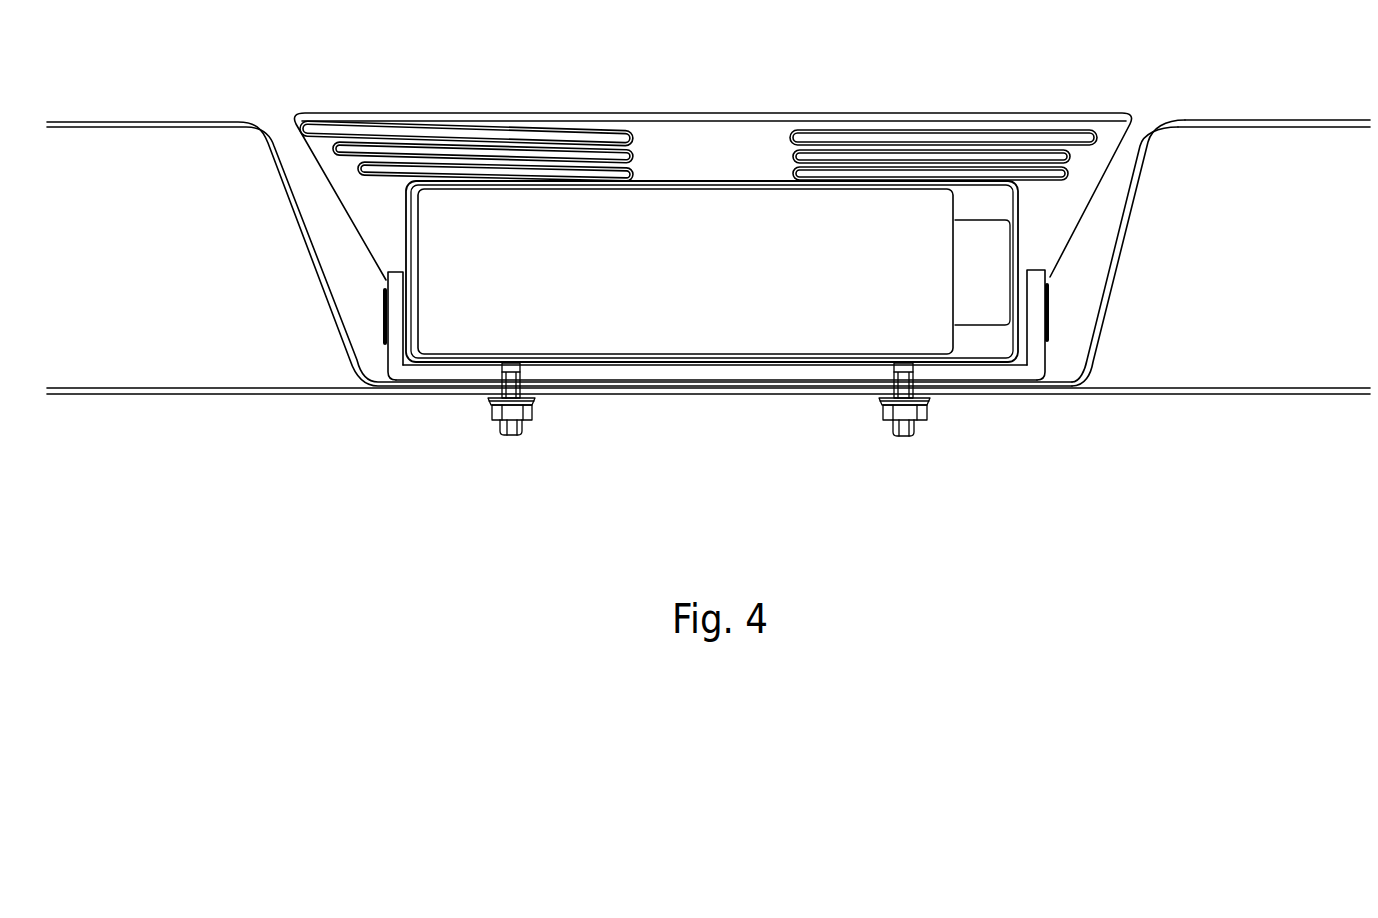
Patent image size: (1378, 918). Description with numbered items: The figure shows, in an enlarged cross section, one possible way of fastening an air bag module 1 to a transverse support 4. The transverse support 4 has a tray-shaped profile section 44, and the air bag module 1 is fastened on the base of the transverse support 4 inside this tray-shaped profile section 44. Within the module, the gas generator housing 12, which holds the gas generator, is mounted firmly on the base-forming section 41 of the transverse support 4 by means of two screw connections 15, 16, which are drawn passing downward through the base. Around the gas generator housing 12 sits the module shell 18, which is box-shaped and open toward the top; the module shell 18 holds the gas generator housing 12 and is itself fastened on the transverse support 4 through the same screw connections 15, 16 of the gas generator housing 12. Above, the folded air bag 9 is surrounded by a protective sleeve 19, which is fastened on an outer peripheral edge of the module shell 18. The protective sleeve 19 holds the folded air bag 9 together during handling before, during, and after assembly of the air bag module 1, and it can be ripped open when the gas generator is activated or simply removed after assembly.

The air bag module 1 is at (640, 110).
The folded air bag 9 is at (812, 150).
The protective sleeve 19 is at (1138, 117).
The tray-shaped profile section 44 is at (1105, 330).
The gas generator housing 12 is at (688, 337).
The module shell 18 is at (404, 372).
The base-forming section 41 is at (813, 393).
The transverse support 4 is at (157, 362).
The screw connection 15 is at (507, 417).
The screw connection 16 is at (907, 407).